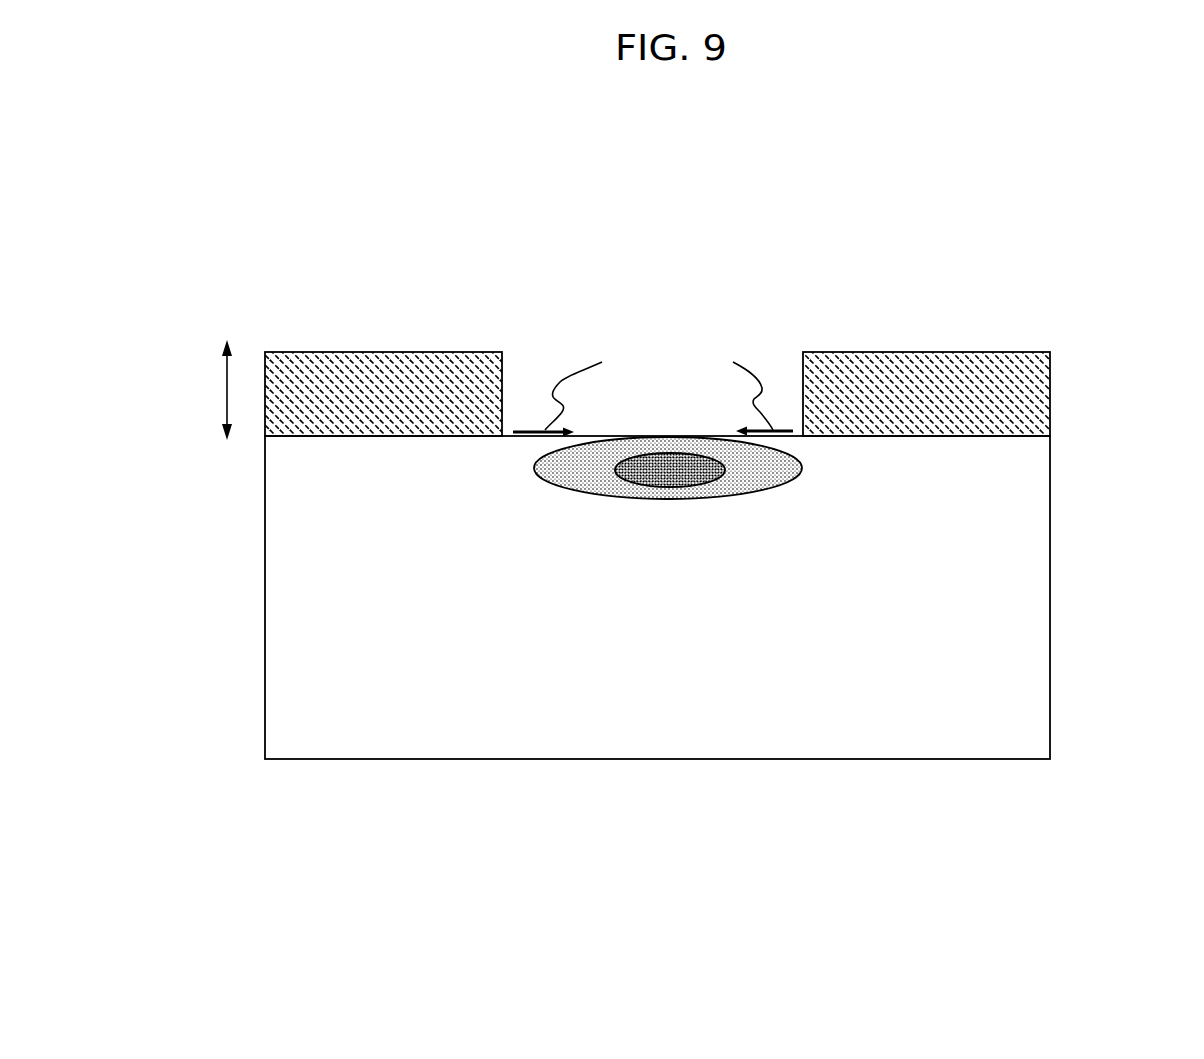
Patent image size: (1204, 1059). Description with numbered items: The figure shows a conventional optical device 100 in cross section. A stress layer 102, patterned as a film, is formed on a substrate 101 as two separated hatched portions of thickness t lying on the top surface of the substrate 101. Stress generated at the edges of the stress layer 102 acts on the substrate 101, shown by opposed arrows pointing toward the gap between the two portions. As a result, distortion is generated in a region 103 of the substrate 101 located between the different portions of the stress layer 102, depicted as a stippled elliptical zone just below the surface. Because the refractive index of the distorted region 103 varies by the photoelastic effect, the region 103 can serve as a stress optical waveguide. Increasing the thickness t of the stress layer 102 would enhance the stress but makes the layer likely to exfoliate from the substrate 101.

The optical device 100 is at (671, 566).
The substrate 101 is at (1020, 575).
The stress layer 102 is at (925, 352).
The region 103 is at (767, 474).